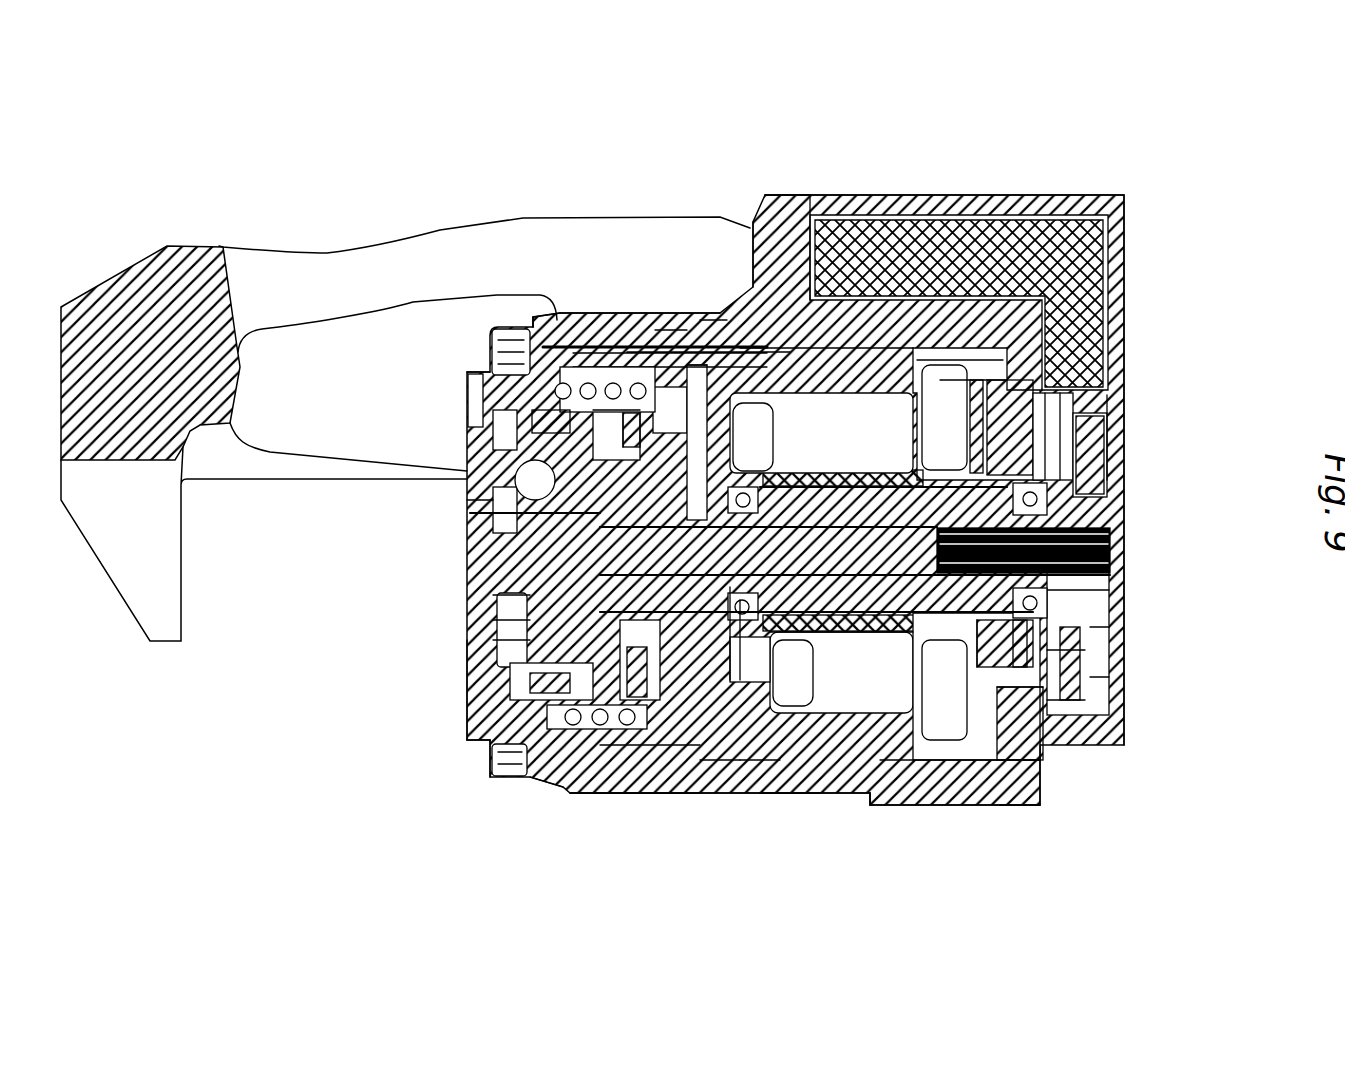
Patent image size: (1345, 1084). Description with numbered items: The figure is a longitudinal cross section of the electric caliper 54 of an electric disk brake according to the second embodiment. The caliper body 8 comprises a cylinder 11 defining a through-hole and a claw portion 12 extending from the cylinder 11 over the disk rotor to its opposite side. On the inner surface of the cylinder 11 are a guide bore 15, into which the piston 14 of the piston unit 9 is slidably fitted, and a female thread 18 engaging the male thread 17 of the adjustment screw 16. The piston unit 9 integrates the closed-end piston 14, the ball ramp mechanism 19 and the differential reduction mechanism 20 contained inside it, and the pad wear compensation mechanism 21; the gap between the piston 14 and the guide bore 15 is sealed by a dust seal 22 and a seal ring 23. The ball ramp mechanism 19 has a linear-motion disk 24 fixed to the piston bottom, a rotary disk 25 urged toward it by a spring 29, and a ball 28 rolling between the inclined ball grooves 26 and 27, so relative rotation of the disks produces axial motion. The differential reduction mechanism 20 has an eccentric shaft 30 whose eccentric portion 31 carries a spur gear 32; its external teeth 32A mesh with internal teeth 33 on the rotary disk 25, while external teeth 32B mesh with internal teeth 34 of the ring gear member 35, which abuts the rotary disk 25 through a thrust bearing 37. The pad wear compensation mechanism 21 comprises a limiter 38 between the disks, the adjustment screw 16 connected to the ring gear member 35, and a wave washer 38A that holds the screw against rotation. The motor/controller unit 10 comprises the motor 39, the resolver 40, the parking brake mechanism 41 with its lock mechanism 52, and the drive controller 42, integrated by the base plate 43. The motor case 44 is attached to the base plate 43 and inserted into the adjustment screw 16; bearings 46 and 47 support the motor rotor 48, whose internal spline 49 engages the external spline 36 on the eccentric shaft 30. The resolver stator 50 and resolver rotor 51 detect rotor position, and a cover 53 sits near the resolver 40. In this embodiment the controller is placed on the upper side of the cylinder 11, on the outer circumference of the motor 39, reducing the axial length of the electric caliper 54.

The caliper body 8 is at (790, 198).
The piston unit 9 is at (680, 750).
The motor/controller unit 10 is at (1055, 192).
The cylinder 11 is at (802, 793).
The claw portion 12 is at (123, 574).
The piston 14 is at (480, 705).
The guide bore 15 is at (617, 760).
The adjustment screw 16 is at (750, 753).
The male thread 17 is at (870, 808).
The female thread 18 is at (790, 798).
The ball ramp mechanism 19 is at (490, 655).
The differential reduction mechanism 20 is at (655, 345).
The pad wear compensation mechanism 21 is at (505, 455).
The dust seal 22 is at (492, 762).
The seal ring 23 is at (545, 779).
The linear-motion disk 24 is at (500, 478).
The rotary disk 25 is at (475, 430).
The ball groove 26 is at (500, 622).
The ball groove 27 is at (505, 735).
The ball 28 is at (478, 511).
The spring 29 is at (577, 313).
The eccentric shaft 30 is at (500, 590).
The eccentric portion 31 is at (500, 560).
The spur gear 32 is at (712, 335).
The external teeth 32A is at (577, 722).
The external teeth 32B is at (633, 730).
The internal teeth 33 is at (618, 335).
The internal teeth 34 is at (752, 232).
The ring gear member 35 is at (740, 340).
The external spline 36 is at (1112, 516).
The thrust bearing 37 is at (625, 340).
The limiter 38 is at (537, 327).
The wave washer 38A is at (717, 753).
The motor 39 is at (870, 753).
The resolver 40 is at (1108, 405).
The parking brake mechanism 41 is at (985, 680).
The drive controller 42 is at (1112, 245).
The base plate 43 is at (1022, 800).
The motor case 44 is at (930, 358).
The bearing 46 is at (853, 330).
The bearing 47 is at (1047, 492).
The motor rotor 48 is at (815, 700).
The internal spline 49 is at (1112, 550).
The resolver stator 50 is at (1097, 655).
The resolver rotor 51 is at (1050, 600).
The lock mechanism 52 is at (1005, 690).
The cover 53 is at (1092, 662).
The electric caliper 54 is at (937, 113).